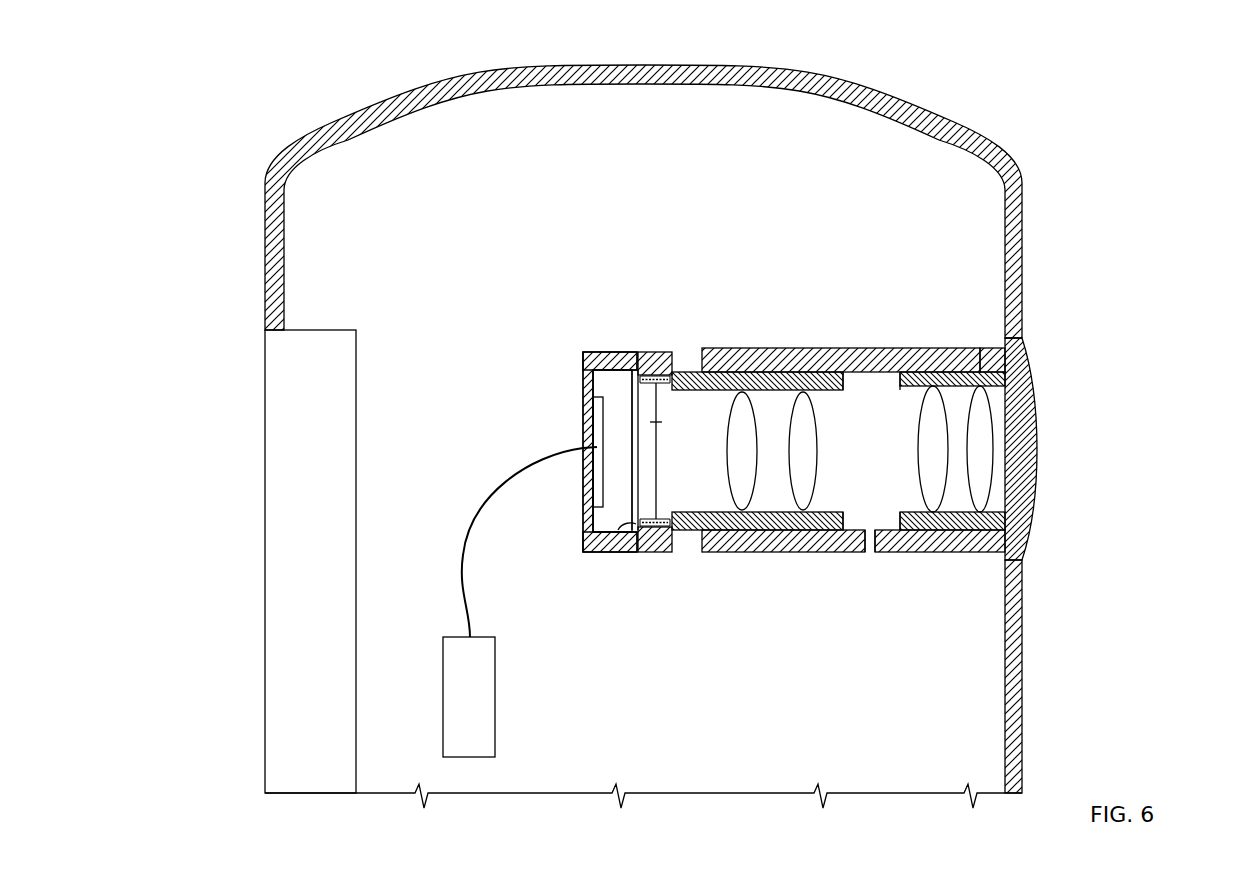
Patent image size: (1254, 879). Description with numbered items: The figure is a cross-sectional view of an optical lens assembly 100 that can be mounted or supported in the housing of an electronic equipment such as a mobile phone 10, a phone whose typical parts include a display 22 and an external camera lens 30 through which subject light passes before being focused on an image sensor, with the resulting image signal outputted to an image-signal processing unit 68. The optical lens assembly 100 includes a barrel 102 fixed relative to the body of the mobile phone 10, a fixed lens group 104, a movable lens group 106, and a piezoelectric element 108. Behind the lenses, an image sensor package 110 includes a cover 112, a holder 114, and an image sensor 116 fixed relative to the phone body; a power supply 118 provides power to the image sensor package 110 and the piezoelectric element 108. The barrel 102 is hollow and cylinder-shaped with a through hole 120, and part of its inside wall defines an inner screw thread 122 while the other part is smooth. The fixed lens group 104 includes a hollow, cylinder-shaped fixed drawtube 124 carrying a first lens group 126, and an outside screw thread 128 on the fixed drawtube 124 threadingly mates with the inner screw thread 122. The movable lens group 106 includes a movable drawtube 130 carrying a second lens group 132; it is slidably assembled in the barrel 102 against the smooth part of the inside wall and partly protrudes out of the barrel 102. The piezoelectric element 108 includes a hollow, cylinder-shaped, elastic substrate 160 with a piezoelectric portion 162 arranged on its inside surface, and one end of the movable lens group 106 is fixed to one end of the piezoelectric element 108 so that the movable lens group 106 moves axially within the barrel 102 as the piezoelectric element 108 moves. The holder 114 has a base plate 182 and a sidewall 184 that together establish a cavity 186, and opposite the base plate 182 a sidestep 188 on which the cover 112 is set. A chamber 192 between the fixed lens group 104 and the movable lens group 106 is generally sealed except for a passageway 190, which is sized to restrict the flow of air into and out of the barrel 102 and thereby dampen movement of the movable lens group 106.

The mobile phone 10 is at (910, 98).
The display 22 is at (280, 377).
The external camera lens 30 is at (1037, 362).
The image-signal processing unit 68 is at (495, 692).
The optical lens assembly 100 is at (765, 485).
The barrel 102 is at (887, 552).
The fixed lens group 104 is at (952, 510).
The movable lens group 106 is at (838, 465).
The piezoelectric element 108 is at (623, 493).
The image sensor package 110 is at (594, 450).
The cover 112 is at (610, 552).
The holder 114 is at (584, 547).
The image sensor 116 is at (598, 493).
The power supply 118 is at (655, 428).
The through hole 120 is at (853, 347).
The inner screw thread 122 is at (913, 347).
The fixed drawtube 124 is at (978, 487).
The first lens group 126 is at (930, 541).
The outside screw thread 128 is at (987, 346).
The movable drawtube 130 is at (737, 541).
The second lens group 132 is at (805, 541).
The substrate 160 is at (650, 553).
The piezoelectric portion 162 is at (672, 553).
The base plate 182 is at (590, 380).
The sidewall 184 is at (602, 352).
The cavity 186 is at (608, 383).
The sidestep 188 is at (623, 352).
The passageway 190 is at (869, 524).
The chamber 192 is at (890, 453).